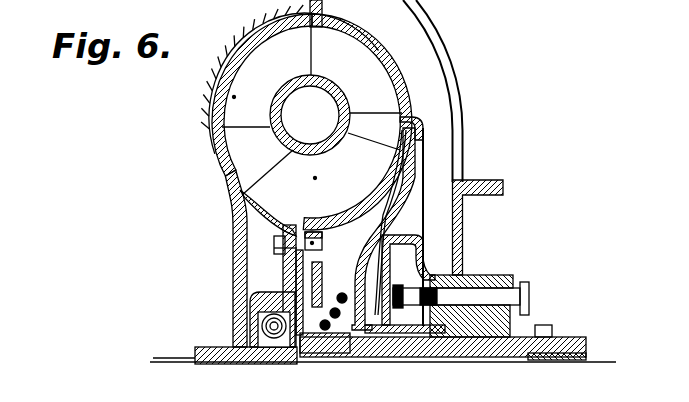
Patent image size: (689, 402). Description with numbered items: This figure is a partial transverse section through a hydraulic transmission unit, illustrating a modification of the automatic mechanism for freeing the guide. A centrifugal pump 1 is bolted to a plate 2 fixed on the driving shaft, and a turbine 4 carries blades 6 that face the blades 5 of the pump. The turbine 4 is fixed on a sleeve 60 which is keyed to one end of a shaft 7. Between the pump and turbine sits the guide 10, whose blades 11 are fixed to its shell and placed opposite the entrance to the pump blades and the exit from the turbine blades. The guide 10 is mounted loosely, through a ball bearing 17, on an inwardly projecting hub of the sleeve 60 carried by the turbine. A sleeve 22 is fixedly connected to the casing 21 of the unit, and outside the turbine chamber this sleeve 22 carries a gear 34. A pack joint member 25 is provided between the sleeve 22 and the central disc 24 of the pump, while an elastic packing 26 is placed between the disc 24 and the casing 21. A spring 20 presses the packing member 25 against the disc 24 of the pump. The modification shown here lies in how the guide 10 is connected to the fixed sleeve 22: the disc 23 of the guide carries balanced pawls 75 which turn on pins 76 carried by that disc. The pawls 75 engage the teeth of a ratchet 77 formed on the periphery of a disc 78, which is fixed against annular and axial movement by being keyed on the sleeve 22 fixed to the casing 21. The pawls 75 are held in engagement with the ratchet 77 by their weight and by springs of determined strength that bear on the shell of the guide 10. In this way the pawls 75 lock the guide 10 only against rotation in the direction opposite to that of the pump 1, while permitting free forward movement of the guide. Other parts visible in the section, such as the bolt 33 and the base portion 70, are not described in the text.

The centrifugal pump 1 is at (390, 73).
The plate 2 is at (211, 77).
The turbine 4 is at (214, 139).
The pump blades 5 is at (375, 100).
The turbine blades 6 is at (233, 98).
The shaft 7 is at (591, 374).
The guide 10 is at (420, 160).
The guide blades 11 is at (314, 178).
The ball bearing 17 is at (250, 323).
The spring 20 is at (313, 243).
The casing 21 is at (468, 182).
The sleeve 22 is at (500, 276).
The disc of the guide 23 is at (288, 272).
The central disc of the pump 24 is at (424, 213).
The pack joint member 25 is at (431, 257).
The elastic packing 26 is at (390, 306).
The bolt 33 is at (467, 338).
The gear 34 is at (543, 325).
The sleeve 60 is at (225, 353).
The base step 70 is at (350, 346).
The balanced pawls 75 is at (282, 250).
The pins 76 is at (278, 238).
The ratchet 77 is at (283, 285).
The disc 78 is at (272, 326).